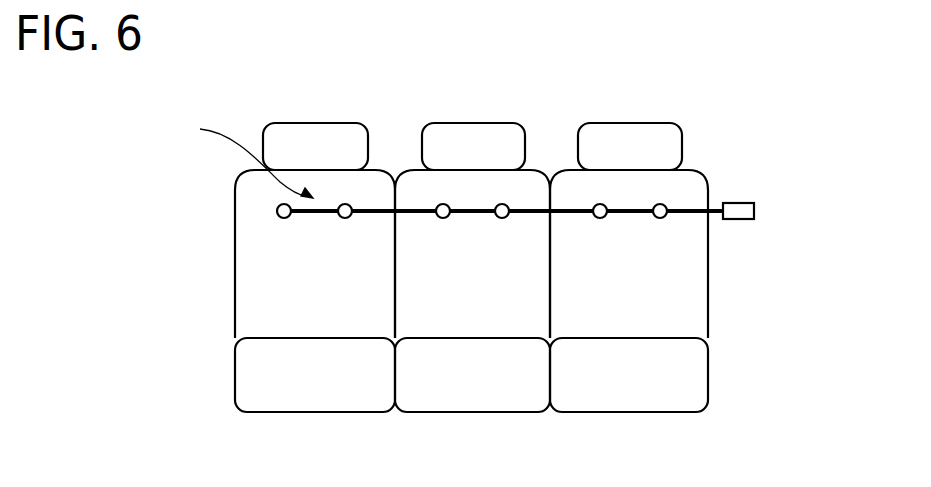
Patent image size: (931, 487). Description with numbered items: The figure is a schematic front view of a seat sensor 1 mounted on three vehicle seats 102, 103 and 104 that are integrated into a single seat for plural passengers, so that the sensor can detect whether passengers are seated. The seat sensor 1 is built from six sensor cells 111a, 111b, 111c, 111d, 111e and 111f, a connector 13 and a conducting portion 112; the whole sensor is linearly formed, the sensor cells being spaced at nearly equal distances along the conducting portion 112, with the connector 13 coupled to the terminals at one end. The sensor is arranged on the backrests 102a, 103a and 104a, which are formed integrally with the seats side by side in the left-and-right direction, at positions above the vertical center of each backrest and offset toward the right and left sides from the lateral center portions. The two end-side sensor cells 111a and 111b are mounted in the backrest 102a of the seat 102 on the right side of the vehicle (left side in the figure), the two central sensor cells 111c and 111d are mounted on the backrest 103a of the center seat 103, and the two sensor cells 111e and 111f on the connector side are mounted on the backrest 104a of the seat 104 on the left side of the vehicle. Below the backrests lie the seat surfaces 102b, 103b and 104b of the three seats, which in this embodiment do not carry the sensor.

The seat sensor 1 is at (249, 156).
The connector 13 is at (741, 203).
The seat 102 is at (320, 123).
The seat 103 is at (462, 123).
The seat 104 is at (647, 123).
The backrest 102a is at (263, 308).
The backrest 103a is at (425, 272).
The backrest 104a is at (673, 302).
The seat surface 102b is at (327, 388).
The seat surface 103b is at (487, 388).
The seat surface 104b is at (647, 388).
The sensor cell 111a is at (281, 205).
The sensor cell 111b is at (343, 204).
The sensor cell 111c is at (441, 204).
The sensor cell 111d is at (502, 204).
The sensor cell 111e is at (600, 204).
The sensor cell 111f is at (660, 204).
The conducting portion 112 is at (635, 213).